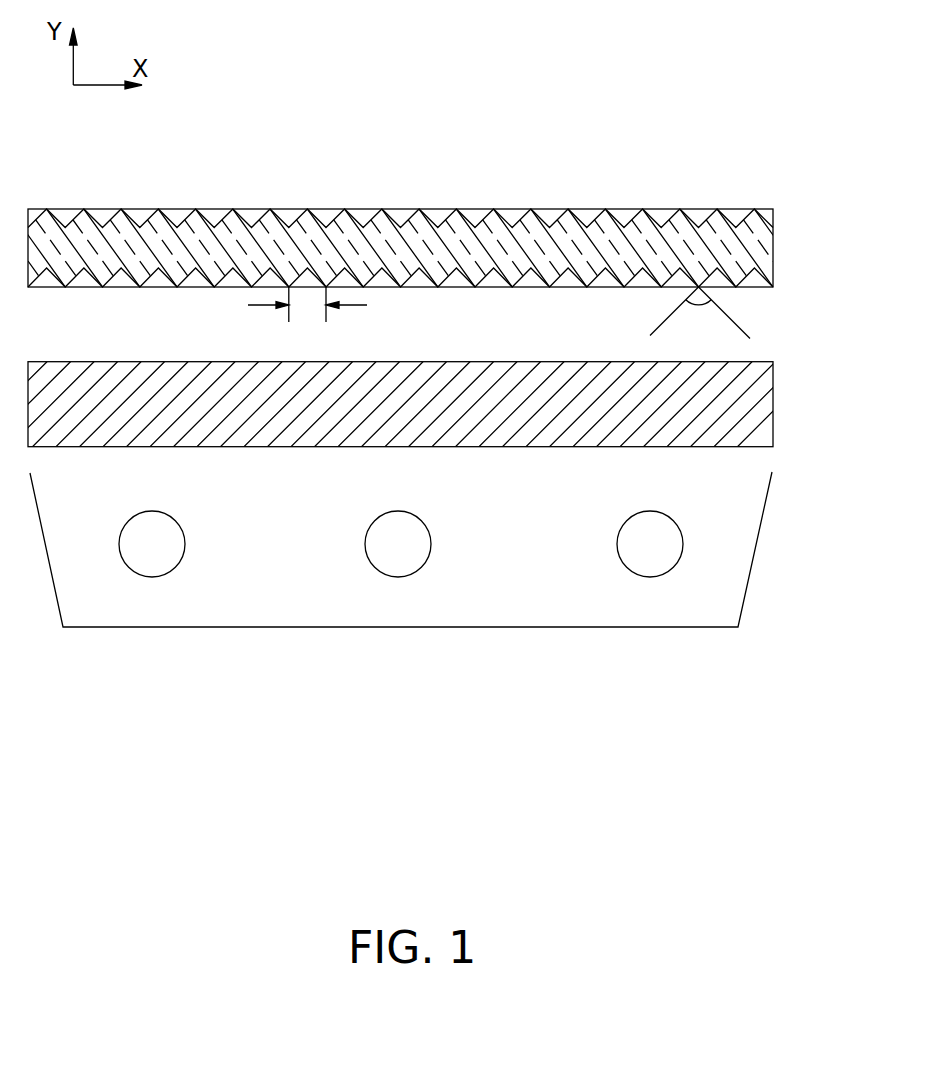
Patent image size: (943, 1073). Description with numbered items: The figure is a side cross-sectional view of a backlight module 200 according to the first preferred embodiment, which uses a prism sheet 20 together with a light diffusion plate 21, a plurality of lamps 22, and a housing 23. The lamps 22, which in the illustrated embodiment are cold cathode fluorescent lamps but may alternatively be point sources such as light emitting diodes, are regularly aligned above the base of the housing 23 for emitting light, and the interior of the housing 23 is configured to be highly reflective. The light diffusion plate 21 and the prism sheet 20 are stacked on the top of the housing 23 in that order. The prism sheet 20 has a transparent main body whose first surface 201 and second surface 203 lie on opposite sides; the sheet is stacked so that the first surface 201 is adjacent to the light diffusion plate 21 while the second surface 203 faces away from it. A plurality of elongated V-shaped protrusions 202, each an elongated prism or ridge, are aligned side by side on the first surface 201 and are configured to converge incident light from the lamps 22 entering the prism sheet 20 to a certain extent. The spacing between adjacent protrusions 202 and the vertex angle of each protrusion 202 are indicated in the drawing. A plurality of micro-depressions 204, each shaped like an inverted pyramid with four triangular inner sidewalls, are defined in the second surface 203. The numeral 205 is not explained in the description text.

The backlight module 200 is at (482, 145).
The prism sheet 20 is at (781, 207).
The second surface 203 is at (102, 205).
The inclined lines (solid) 205 is at (233, 211).
The micro-depressions 204 is at (661, 219).
The first surface 201 is at (194, 284).
The elongated V-shaped protrusions 202 is at (475, 272).
The light diffusion plate 21 is at (762, 408).
The housing 23 is at (762, 527).
The lamps 22 is at (657, 563).